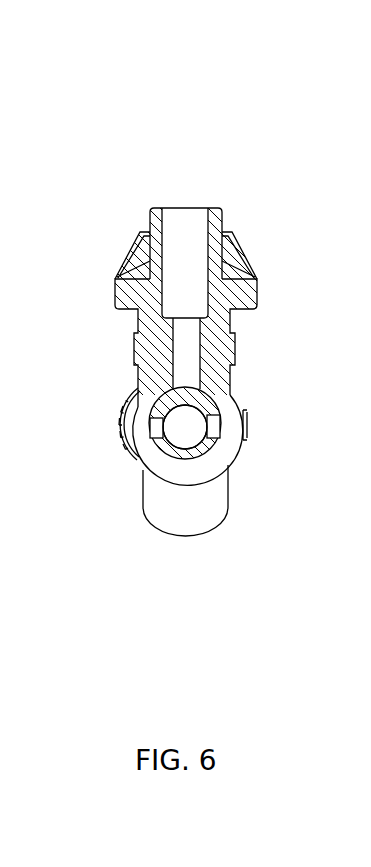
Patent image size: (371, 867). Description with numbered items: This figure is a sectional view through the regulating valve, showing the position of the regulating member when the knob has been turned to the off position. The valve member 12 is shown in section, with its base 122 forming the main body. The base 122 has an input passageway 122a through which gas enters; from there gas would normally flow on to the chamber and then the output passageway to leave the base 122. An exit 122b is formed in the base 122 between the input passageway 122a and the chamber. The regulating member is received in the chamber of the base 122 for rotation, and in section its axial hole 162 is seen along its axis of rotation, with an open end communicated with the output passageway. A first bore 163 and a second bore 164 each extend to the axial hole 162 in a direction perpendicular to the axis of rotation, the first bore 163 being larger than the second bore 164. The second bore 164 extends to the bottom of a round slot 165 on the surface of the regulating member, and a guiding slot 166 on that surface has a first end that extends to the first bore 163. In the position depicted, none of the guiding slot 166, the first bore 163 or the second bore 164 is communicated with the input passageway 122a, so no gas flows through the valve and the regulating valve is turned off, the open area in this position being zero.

The valve member 12 is at (115, 278).
The base 122 is at (148, 342).
The input passageway 122a is at (187, 227).
The exit 122b is at (192, 420).
The axial hole 162 is at (200, 410).
The first bore 163 is at (232, 463).
The second bore 164 is at (138, 388).
The round slot 165 is at (150, 428).
The guiding slot 166 is at (147, 460).